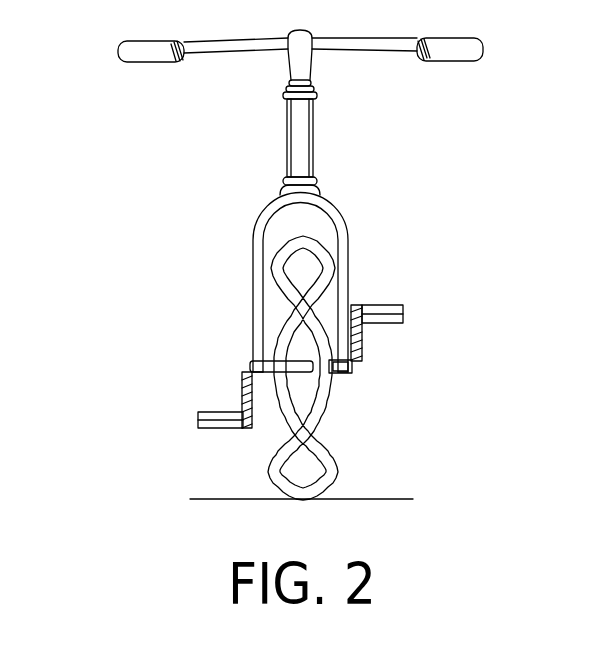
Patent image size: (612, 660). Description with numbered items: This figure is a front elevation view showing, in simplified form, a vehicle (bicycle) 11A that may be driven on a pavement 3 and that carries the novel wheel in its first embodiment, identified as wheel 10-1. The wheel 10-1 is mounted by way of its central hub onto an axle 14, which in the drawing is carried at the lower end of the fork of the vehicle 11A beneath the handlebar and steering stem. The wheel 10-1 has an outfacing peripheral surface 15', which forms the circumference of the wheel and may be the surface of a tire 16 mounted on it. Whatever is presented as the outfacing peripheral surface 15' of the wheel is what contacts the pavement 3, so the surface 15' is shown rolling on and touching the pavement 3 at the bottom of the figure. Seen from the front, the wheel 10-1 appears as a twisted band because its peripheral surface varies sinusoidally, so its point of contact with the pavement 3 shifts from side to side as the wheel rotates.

The wheel 10-1 is at (176, 489).
The vehicle (bicycle) 11A is at (236, 141).
The outfacing peripheral surface 15' is at (349, 336).
The tire 16 is at (330, 392).
The axle 14 is at (258, 359).
The pavement 3 is at (394, 499).